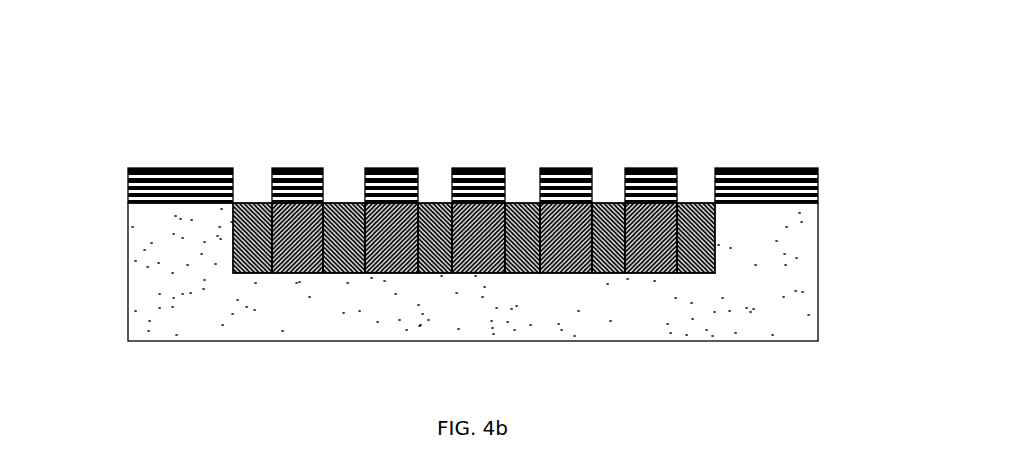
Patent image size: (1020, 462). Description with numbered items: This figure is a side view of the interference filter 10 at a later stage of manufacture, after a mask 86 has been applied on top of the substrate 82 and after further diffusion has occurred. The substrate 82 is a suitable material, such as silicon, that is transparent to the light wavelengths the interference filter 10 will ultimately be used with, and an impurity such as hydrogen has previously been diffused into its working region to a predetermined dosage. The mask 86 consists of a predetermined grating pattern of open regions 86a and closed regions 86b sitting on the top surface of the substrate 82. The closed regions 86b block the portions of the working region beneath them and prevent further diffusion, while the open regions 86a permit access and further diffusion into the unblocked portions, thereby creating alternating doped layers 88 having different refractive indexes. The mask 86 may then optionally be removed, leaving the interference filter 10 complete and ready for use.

The interference filter 10 is at (820, 66).
The substrate 82 is at (128, 278).
The mask 86 is at (770, 170).
The open regions 86a is at (345, 165).
The closed regions 86b is at (183, 168).
The alternating doped layers 88 is at (522, 186).